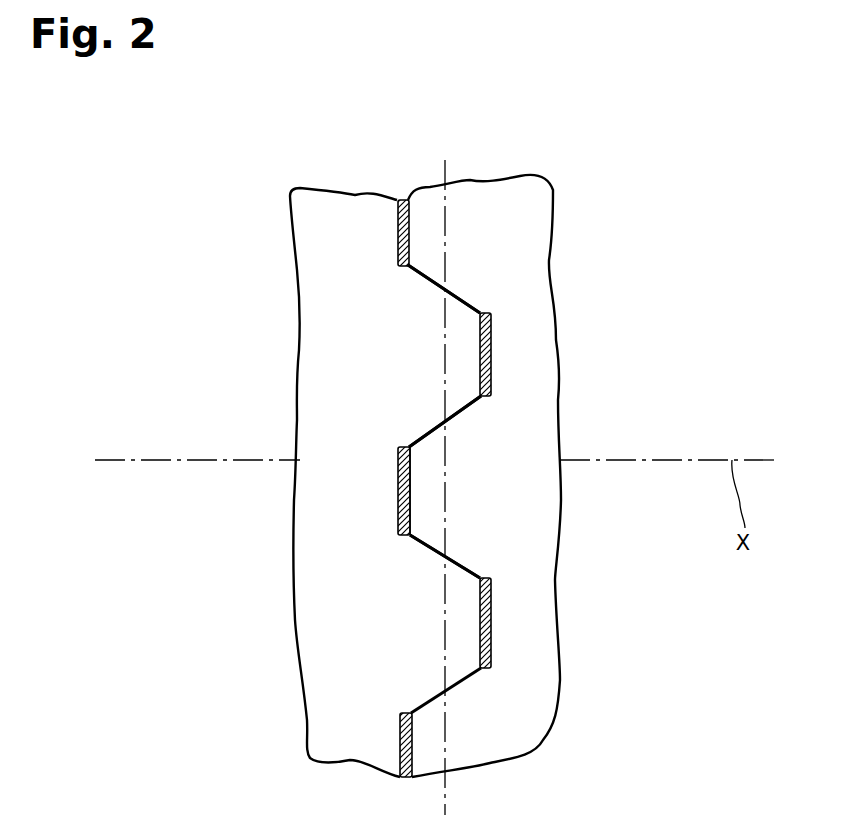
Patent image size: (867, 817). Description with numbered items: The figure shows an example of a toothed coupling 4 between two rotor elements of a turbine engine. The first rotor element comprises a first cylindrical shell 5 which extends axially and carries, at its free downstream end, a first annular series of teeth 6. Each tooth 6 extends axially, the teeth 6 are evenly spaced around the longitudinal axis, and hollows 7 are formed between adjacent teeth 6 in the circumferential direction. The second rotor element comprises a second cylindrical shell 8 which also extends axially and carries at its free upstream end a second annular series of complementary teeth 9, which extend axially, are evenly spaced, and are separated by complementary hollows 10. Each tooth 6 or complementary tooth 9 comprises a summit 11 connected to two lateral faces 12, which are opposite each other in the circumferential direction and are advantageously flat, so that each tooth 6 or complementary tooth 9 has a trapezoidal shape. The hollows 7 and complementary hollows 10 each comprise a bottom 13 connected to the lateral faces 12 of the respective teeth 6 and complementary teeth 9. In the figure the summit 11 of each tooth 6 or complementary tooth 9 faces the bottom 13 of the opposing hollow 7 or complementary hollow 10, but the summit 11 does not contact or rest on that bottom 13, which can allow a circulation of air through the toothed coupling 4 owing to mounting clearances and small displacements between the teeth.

The toothed coupling 4 is at (354, 181).
The first cylindrical shell 5 is at (298, 331).
The tooth 6 is at (468, 330).
The hollow 7 is at (409, 218).
The second cylindrical shell 8 is at (525, 258).
The complementary tooth 9 is at (433, 463).
The complementary hollow 10 is at (480, 364).
The summit 11 is at (412, 492).
The lateral face 12 is at (467, 413).
The bottom 13 is at (409, 515).